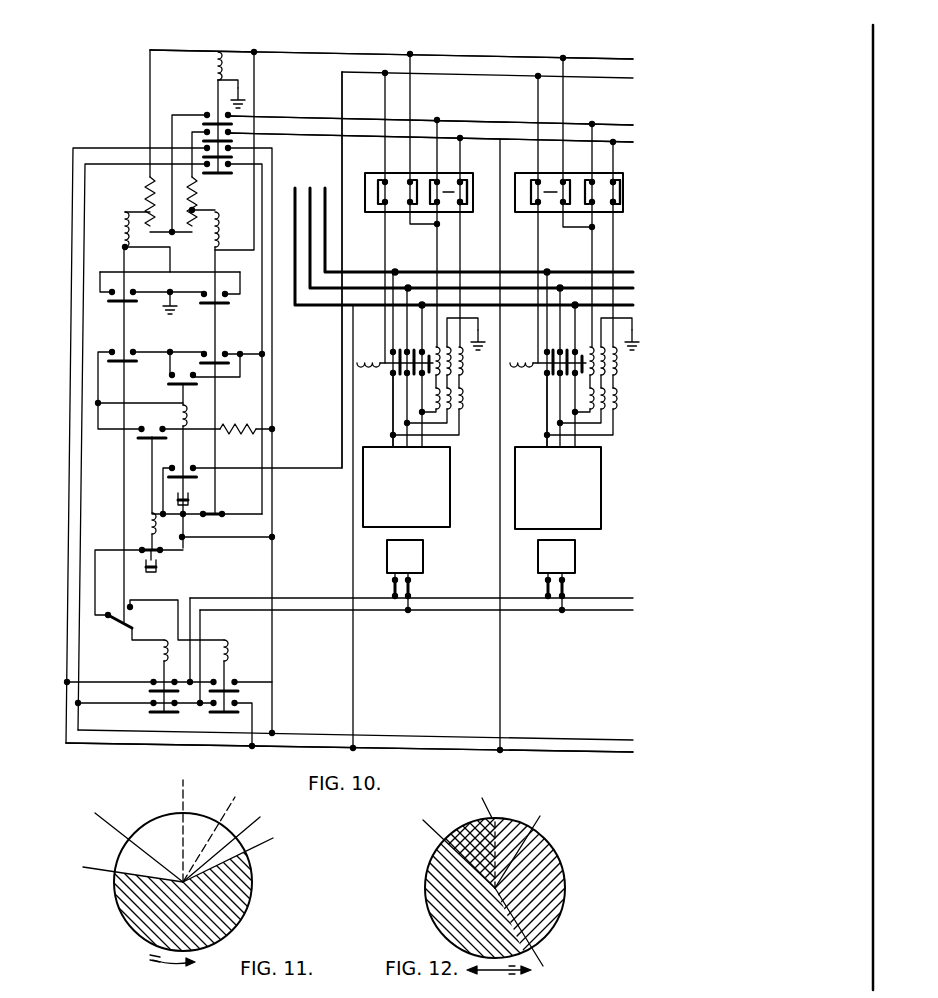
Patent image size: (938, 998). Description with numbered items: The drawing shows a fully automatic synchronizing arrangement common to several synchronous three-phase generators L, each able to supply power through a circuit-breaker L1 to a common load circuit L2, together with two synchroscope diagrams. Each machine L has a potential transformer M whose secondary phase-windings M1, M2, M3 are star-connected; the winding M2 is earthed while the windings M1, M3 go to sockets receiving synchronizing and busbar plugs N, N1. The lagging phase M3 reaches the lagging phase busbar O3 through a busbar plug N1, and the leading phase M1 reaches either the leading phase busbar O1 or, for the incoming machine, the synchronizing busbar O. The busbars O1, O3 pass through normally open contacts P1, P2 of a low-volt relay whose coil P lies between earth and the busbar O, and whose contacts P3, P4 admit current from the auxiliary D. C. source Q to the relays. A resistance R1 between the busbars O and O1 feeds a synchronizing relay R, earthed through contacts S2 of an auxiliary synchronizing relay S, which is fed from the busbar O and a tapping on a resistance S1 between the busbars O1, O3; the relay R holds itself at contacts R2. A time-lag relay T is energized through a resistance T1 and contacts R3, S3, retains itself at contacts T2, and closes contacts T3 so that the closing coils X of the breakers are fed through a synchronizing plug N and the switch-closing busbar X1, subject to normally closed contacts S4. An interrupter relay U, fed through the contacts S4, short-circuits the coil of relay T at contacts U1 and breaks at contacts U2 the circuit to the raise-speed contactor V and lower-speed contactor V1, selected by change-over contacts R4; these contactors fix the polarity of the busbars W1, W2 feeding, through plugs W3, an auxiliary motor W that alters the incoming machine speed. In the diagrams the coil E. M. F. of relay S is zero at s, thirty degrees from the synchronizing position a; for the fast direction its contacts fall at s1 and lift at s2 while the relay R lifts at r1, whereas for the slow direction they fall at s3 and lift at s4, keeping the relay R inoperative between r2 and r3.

In FIG. 10, the low-volt relay P is at (218, 60).
In FIG. 10, the normally open contacts P1 is at (205, 114).
In FIG. 10, the normally open contacts P2 is at (205, 131).
In FIG. 10, the contacts P3 is at (205, 147).
In FIG. 10, the contacts P4 is at (205, 163).
In FIG. 10, the synchronizing relay R is at (125, 230).
In FIG. 10, the resistance R1 is at (148, 197).
In FIG. 10, the retaining contacts R2 is at (108, 302).
In FIG. 10, the normally open contacts R3 is at (108, 361).
In FIG. 10, the change-over contacts R4 is at (125, 627).
In FIG. 10, the auxiliary synchronizing relay S is at (217, 228).
In FIG. 10, the resistance S1 is at (197, 190).
In FIG. 10, the normally open contacts S2 is at (222, 308).
In FIG. 10, the normally open contacts S3 is at (238, 345).
In FIG. 10, the normally closed contacts S4 is at (225, 514).
In FIG. 10, the time-lag relay T is at (178, 424).
In FIG. 10, the resistance T1 is at (240, 431).
In FIG. 10, the retaining contacts T2 is at (168, 384).
In FIG. 10, the normally open contacts T3 is at (200, 478).
In FIG. 10, the interrupter relay U is at (150, 522).
In FIG. 10, the contacts U1 is at (138, 437).
In FIG. 10, the contacts U2 is at (140, 549).
In FIG. 10, the raise-speed contactor V is at (163, 650).
In FIG. 10, the lower-speed contactor V1 is at (235, 648).
In FIG. 10, the auxiliary motor W is at (423, 556).
In FIG. 10, the busbar W1 is at (298, 610).
In FIG. 10, the busbar W2 is at (318, 598).
In FIG. 10, the plugs W3 is at (405, 600).
In FIG. 10, the closing coil X is at (357, 363).
In FIG. 10, the switch-closing busbar X1 is at (342, 468).
In FIG. 10, the synchronous three-phase generator L is at (482, 488).
In FIG. 10, the circuit-breaker L1 is at (415, 378).
In FIG. 10, the common load circuit L2 is at (330, 310).
In FIG. 10, the potential transformer M is at (462, 383).
In FIG. 10, the secondary phase-winding M1 is at (462, 372).
In FIG. 10, the secondary phase-winding M2 is at (462, 362).
In FIG. 10, the secondary phase-winding M3 is at (462, 352).
In FIG. 10, the synchronizing plug N is at (390, 212).
In FIG. 10, the busbar plug N1 is at (452, 205).
In FIG. 10, the synchronizing busbar O is at (465, 52).
In FIG. 10, the leading phase busbar O1 is at (483, 117).
In FIG. 10, the lagging phase busbar O3 is at (502, 136).
In FIG. 10, the auxiliary D. C. source Q is at (585, 750).
In FIG. 11, the synchronizing position a is at (178, 823).
In FIG. 12, the synchronizing position a is at (501, 834).
In FIG. 11, the zero E.M.F. position s is at (212, 833).
In FIG. 12, the zero E.M.F. position s is at (523, 841).
In FIG. 12, the contact-fall position s1 is at (482, 797).
In FIG. 12, the contact-lift position s2 is at (531, 935).
In FIG. 11, the contact-fall position s3 is at (234, 853).
In FIG. 11, the contact-lift position s4 is at (122, 867).
In FIG. 12, the synchronizing relay lift position r1 is at (450, 846).
In FIG. 11, the synchronizing relay operating limit r2 is at (228, 842).
In FIG. 11, the synchronizing relay operating limit r3 is at (137, 840).